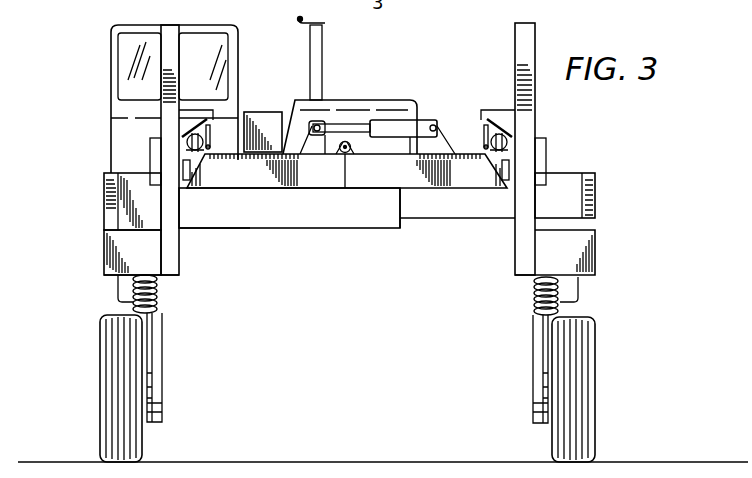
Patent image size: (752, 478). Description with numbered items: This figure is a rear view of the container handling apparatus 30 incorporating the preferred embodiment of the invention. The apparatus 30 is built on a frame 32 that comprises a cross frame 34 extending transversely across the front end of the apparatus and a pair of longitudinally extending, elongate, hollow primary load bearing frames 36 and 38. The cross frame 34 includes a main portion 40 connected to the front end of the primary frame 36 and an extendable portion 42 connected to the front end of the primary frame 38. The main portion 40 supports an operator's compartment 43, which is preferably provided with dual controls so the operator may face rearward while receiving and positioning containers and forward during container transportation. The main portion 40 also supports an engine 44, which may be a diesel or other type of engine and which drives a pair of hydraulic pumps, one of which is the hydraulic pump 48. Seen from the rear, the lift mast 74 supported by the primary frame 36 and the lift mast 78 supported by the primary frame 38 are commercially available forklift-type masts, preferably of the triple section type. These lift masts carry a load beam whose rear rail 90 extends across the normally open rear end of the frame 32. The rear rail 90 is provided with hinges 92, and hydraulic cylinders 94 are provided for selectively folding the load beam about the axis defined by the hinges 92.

The container handling apparatus 30 is at (90, 52).
The frame 32 is at (104, 268).
The cross frame 34 is at (275, 230).
The primary load bearing frame 36 is at (104, 238).
The primary load bearing frame 38 is at (597, 250).
The main portion 40 is at (189, 229).
The extendable portion 42 is at (438, 220).
The operator's compartment 43 is at (238, 48).
The engine 44 is at (350, 100).
The hydraulic pump 48 is at (262, 112).
The lift mast 74 is at (172, 35).
The lift mast 78 is at (513, 42).
The rear rail 90 is at (318, 190).
The hinge 92 is at (338, 155).
The hydraulic cylinder 94 is at (385, 137).